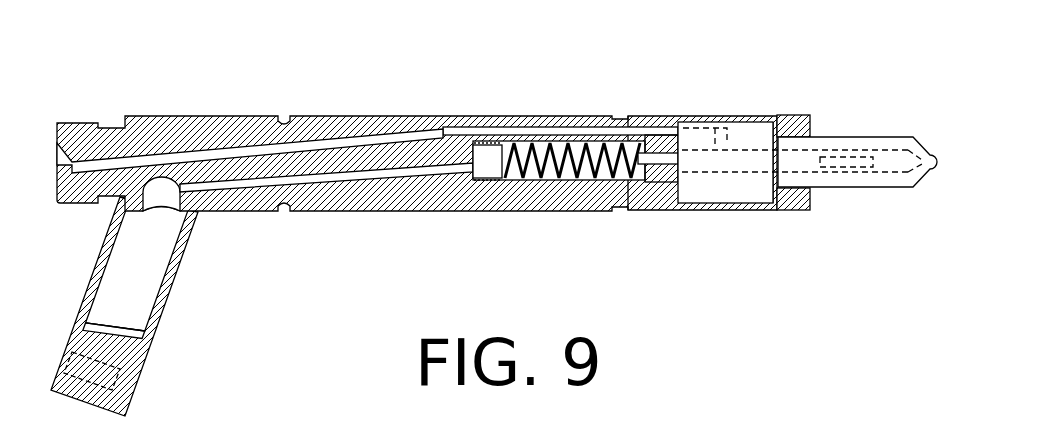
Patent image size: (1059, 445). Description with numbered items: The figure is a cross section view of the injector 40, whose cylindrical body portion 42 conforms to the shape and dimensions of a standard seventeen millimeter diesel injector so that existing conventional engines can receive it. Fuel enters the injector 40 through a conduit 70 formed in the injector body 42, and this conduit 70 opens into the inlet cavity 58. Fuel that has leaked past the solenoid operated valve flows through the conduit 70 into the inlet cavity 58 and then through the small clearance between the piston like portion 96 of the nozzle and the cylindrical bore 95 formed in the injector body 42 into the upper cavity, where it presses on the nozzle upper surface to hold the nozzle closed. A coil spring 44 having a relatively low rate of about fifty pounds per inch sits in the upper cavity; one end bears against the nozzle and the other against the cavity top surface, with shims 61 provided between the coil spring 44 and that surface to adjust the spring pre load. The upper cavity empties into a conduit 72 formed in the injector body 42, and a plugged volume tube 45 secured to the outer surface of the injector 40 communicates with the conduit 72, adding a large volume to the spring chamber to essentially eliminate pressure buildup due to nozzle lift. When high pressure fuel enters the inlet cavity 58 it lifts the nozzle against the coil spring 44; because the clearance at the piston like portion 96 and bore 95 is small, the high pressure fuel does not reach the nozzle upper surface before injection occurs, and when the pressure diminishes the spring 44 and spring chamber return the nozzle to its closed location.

The injector 40 is at (372, 102).
The body portion 42 is at (252, 117).
The coil spring 44 is at (583, 148).
The volume tube 45 is at (160, 342).
The inlet cavity 58 is at (752, 140).
The shims 61 is at (487, 183).
The conduit 70 is at (186, 157).
The conduit 72 is at (322, 184).
The cylindrical bore 95 is at (737, 200).
The piston like portion 96 is at (680, 180).